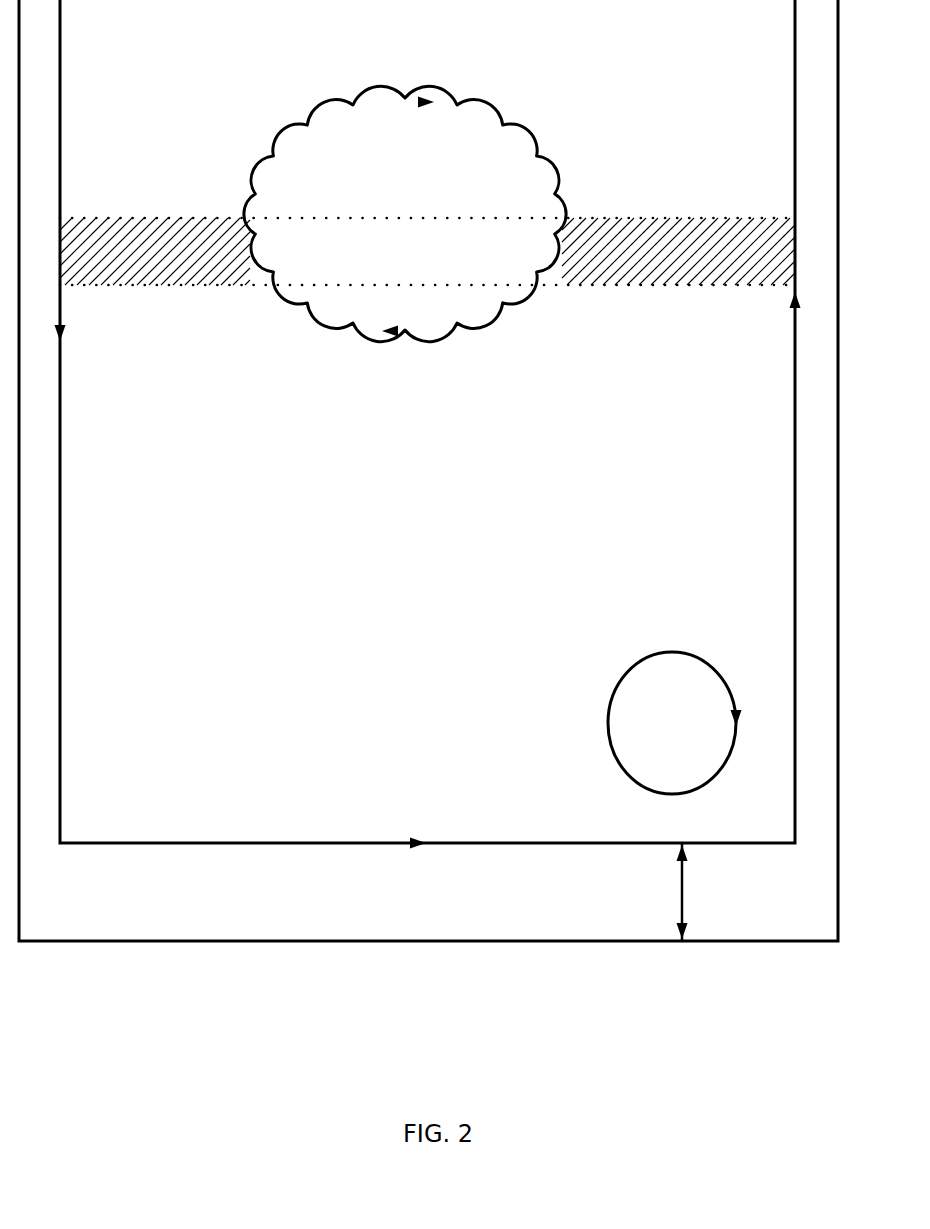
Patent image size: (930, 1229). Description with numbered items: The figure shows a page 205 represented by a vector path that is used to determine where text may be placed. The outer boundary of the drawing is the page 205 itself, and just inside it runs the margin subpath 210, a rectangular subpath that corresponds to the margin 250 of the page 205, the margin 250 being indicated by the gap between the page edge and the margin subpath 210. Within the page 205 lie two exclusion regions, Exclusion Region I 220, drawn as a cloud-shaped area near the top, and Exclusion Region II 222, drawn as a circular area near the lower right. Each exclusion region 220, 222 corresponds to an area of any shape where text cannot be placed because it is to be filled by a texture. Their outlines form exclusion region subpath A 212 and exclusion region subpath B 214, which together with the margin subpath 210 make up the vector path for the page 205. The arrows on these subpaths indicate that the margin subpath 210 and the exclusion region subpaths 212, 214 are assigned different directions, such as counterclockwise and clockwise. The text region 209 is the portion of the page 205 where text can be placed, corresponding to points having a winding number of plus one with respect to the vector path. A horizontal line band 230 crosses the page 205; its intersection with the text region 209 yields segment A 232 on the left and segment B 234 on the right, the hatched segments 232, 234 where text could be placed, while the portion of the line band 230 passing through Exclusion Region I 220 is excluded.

The page 205 is at (476, 921).
The text region 209 is at (274, 651).
The margin subpath 210 is at (320, 843).
The exclusion region subpath A 212 is at (389, 193).
The exclusion region subpath B 214 is at (688, 769).
The exclusion region I 220 is at (457, 280).
The exclusion region II 222 is at (571, 735).
The line band 230 is at (352, 285).
The segment A 232 is at (108, 250).
The segment B 234 is at (757, 248).
The margin 250 is at (684, 888).